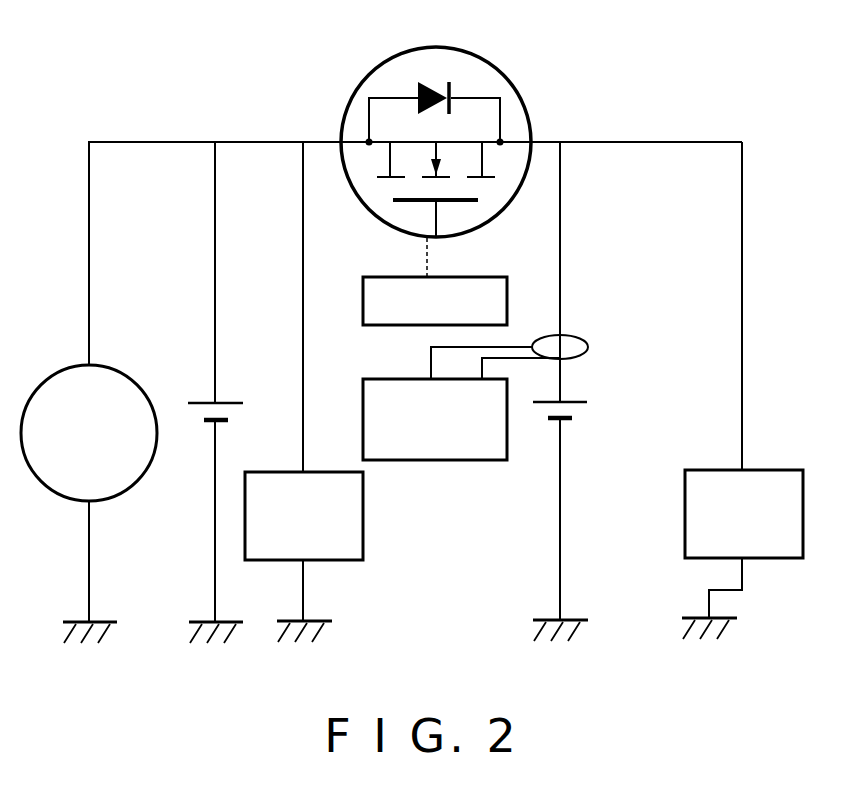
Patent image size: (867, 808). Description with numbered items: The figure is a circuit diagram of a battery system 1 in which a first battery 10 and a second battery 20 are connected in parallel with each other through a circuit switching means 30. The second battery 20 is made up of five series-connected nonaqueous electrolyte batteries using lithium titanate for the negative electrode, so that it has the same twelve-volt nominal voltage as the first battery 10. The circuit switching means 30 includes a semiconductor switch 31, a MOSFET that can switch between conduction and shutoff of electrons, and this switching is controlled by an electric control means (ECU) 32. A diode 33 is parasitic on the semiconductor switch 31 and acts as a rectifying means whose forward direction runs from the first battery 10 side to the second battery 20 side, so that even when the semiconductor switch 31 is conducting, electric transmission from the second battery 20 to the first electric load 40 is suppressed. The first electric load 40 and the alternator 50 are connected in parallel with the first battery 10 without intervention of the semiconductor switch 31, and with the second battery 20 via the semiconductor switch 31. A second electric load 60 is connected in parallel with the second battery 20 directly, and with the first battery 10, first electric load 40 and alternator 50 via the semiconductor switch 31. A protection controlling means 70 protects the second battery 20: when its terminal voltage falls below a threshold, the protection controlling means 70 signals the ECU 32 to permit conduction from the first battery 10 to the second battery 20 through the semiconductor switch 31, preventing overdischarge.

The battery system 1 is at (688, 118).
The first battery 10 is at (203, 432).
The second battery 20 is at (582, 434).
The circuit switching means 30 is at (415, 121).
The semiconductor switch 31 is at (513, 170).
The electric control means (ECU) 32 is at (488, 276).
The diode 33 is at (433, 88).
The first electric load 40 is at (287, 471).
The alternator 50 is at (58, 368).
The second electric load 60 is at (775, 469).
The protection controlling means 70 is at (481, 462).